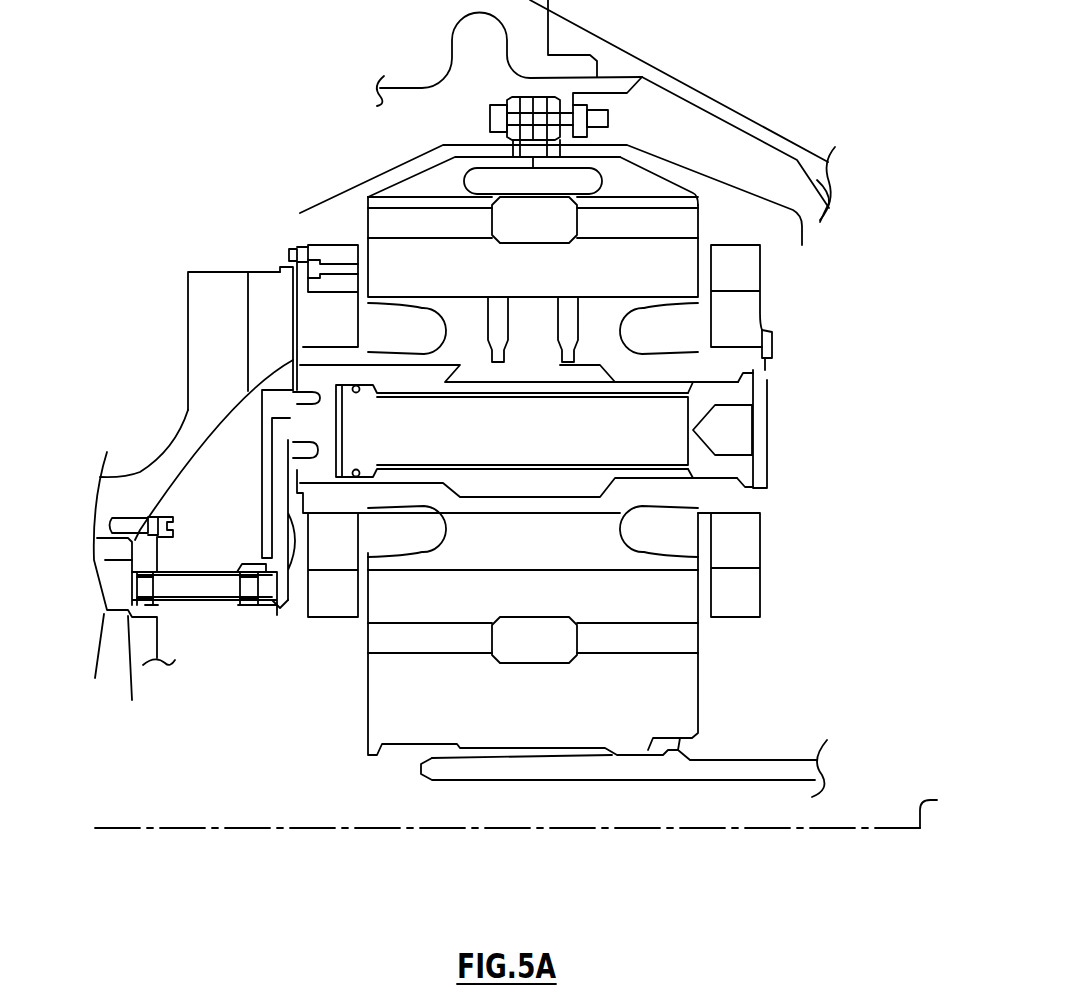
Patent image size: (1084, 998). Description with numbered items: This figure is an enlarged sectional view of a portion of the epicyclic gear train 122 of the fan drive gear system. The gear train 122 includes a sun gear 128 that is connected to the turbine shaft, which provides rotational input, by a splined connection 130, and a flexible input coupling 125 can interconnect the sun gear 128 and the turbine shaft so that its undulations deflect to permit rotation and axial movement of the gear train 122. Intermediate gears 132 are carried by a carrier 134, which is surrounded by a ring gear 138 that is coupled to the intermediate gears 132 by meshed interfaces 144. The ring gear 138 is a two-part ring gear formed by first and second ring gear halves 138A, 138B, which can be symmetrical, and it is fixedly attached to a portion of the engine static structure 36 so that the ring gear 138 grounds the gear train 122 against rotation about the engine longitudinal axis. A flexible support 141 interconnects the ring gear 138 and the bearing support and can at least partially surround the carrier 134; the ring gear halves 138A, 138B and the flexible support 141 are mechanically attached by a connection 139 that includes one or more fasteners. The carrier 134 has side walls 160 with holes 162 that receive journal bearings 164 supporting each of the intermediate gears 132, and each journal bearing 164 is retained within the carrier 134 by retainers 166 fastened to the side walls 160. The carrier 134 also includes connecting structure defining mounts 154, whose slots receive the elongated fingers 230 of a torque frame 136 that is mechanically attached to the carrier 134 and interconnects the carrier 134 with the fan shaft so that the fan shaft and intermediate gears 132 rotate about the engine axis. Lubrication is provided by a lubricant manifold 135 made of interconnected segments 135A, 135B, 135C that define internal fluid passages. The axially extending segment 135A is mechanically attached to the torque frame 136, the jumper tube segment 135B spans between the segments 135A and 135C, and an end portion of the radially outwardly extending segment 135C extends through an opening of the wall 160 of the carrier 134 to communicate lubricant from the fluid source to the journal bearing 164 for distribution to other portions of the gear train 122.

The engine static structure 36 is at (750, 118).
The epicyclic gear train 122 is at (195, 105).
The flexible input coupling 125 is at (797, 746).
The sun gear 128 is at (366, 738).
The splined connection 130 is at (553, 762).
The intermediate gears 132 is at (683, 598).
The carrier 134 is at (333, 230).
The lubricant manifold 135 is at (117, 632).
The axially extending segment 135A is at (132, 700).
The jumper tube segment 135B is at (205, 600).
The radially outwardly extending segment 135C is at (264, 497).
The torque frame 136 is at (202, 340).
The ring gear 138 is at (415, 170).
The first ring gear half 138A is at (623, 190).
The second ring gear half 138B is at (450, 177).
The connection 139 is at (608, 118).
The flexible support 141 is at (445, 70).
The meshed interfaces 144 is at (388, 200).
The mounts 154 is at (290, 250).
The side walls 160 is at (317, 247).
The holes 162 is at (342, 570).
The journal bearing 164 is at (727, 353).
The retainers 166 is at (302, 597).
The elongated fingers 230 is at (272, 310).